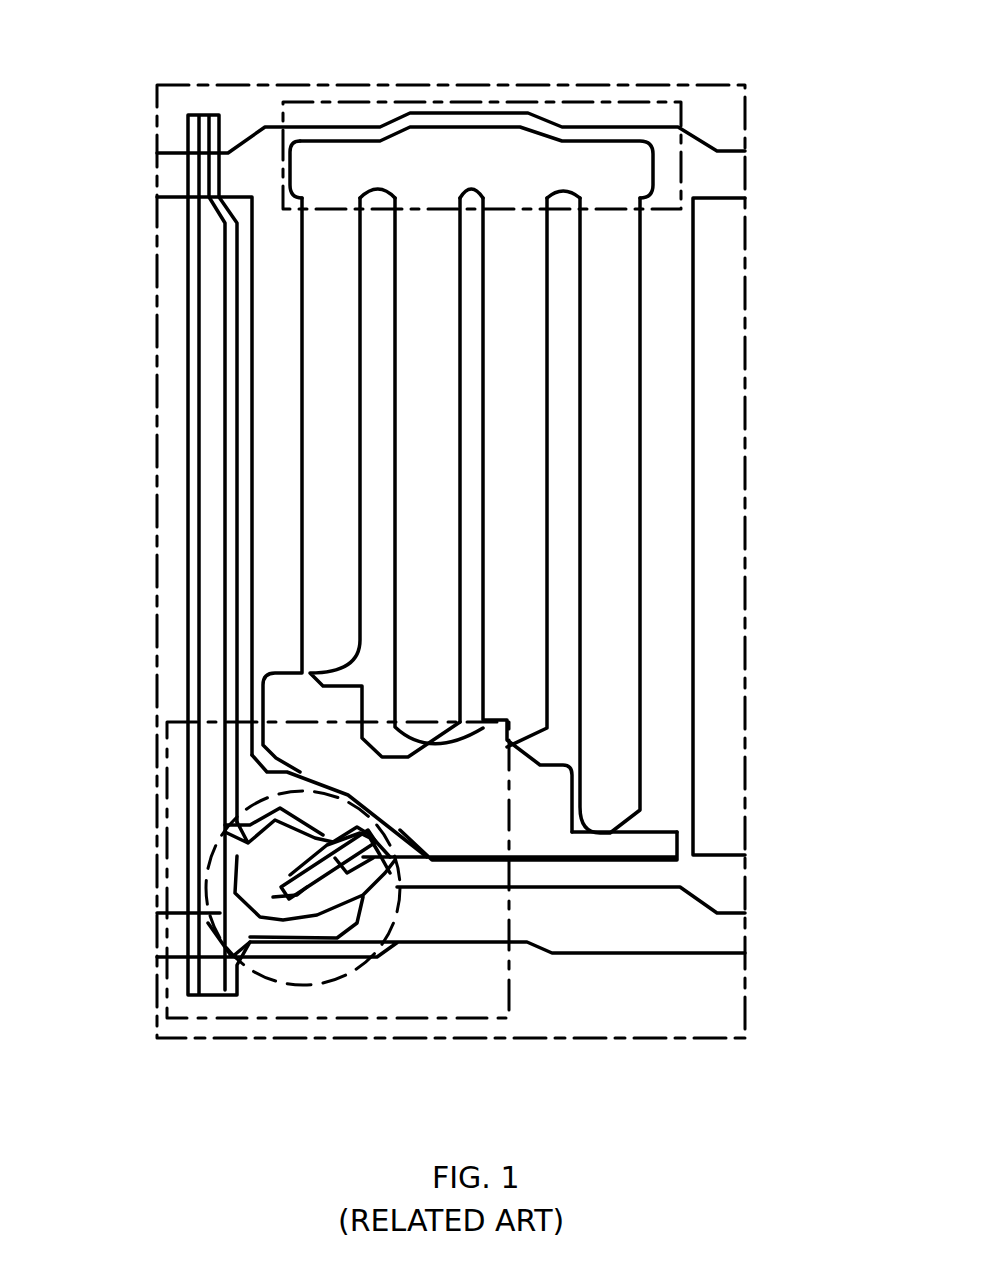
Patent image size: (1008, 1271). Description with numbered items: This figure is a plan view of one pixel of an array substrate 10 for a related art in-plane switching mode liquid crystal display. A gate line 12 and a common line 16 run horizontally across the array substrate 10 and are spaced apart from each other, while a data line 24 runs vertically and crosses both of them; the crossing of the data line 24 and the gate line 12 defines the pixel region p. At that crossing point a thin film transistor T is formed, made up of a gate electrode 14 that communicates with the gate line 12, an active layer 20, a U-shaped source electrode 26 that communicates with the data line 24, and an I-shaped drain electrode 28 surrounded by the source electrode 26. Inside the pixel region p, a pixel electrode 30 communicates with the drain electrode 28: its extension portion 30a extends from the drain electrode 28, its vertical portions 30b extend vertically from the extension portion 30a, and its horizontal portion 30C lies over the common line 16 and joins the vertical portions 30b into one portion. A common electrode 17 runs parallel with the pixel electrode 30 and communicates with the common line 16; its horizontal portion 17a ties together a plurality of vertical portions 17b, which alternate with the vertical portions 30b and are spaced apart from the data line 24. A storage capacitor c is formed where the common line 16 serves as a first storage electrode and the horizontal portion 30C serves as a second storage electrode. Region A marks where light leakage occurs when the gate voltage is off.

The array substrate 10 is at (746, 243).
The gate line 12 is at (665, 955).
The gate electrode 14 is at (338, 842).
The common line 16 is at (715, 150).
The common electrode 17 is at (619, 529).
The horizontal portion of the common electrode 17a is at (683, 842).
The vertical portions of the common electrode 17b is at (680, 808).
The active layer 20 is at (350, 885).
The data line 24 is at (190, 500).
The source electrode 26 is at (310, 922).
The drain electrode 28 is at (360, 905).
The pixel electrode 30 is at (579, 515).
The extension portion of the pixel electrode 30a is at (643, 827).
The vertical portion of the pixel electrode 30b is at (582, 700).
The horizontal portion of the pixel electrode 30C is at (625, 140).
The storage capacitor c is at (527, 108).
The pixel region p is at (718, 431).
The thin film transistor T is at (212, 862).
The region A is at (213, 1022).